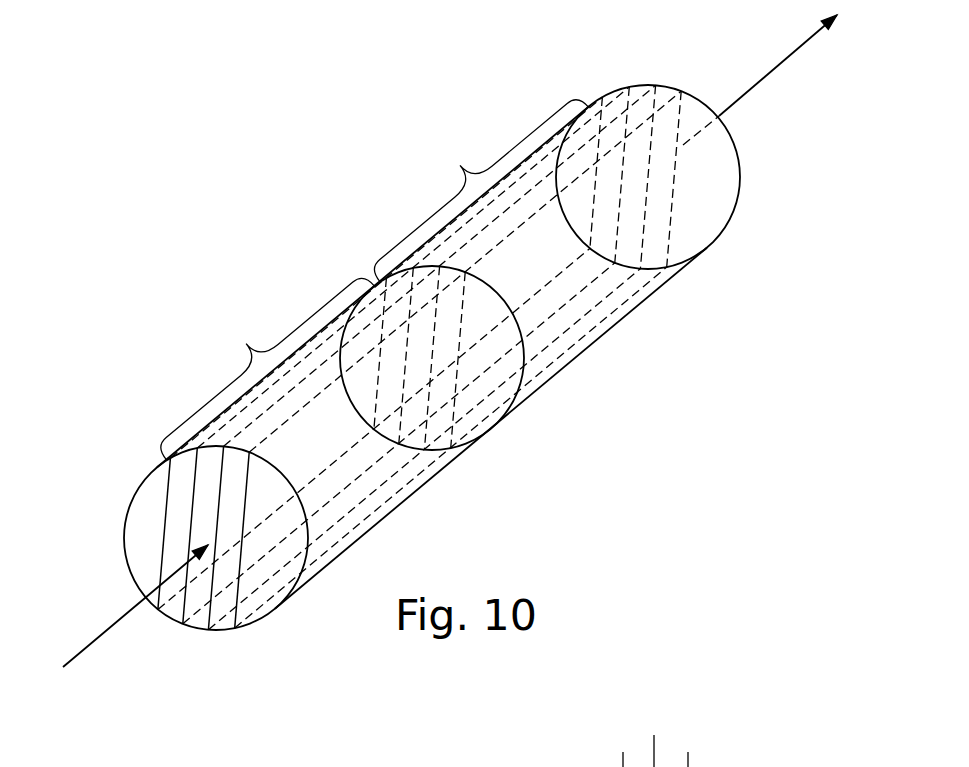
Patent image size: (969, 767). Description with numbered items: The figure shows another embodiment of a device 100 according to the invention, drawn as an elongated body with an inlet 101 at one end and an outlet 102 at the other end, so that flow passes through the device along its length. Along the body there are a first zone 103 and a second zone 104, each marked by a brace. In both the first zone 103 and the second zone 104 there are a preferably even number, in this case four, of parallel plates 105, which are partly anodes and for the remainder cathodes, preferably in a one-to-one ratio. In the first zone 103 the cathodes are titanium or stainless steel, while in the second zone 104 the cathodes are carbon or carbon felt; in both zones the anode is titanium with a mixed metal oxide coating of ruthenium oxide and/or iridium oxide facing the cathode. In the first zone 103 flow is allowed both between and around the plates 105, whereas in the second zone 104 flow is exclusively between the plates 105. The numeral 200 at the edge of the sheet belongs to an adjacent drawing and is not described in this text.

The device 100 is at (338, 142).
The inlet 101 is at (90, 648).
The outlet 102 is at (778, 67).
The first zone 103 is at (268, 368).
The second zone 104 is at (481, 191).
The parallel plates 105 is at (207, 631).
The element of adjacent figure 200 is at (905, 766).